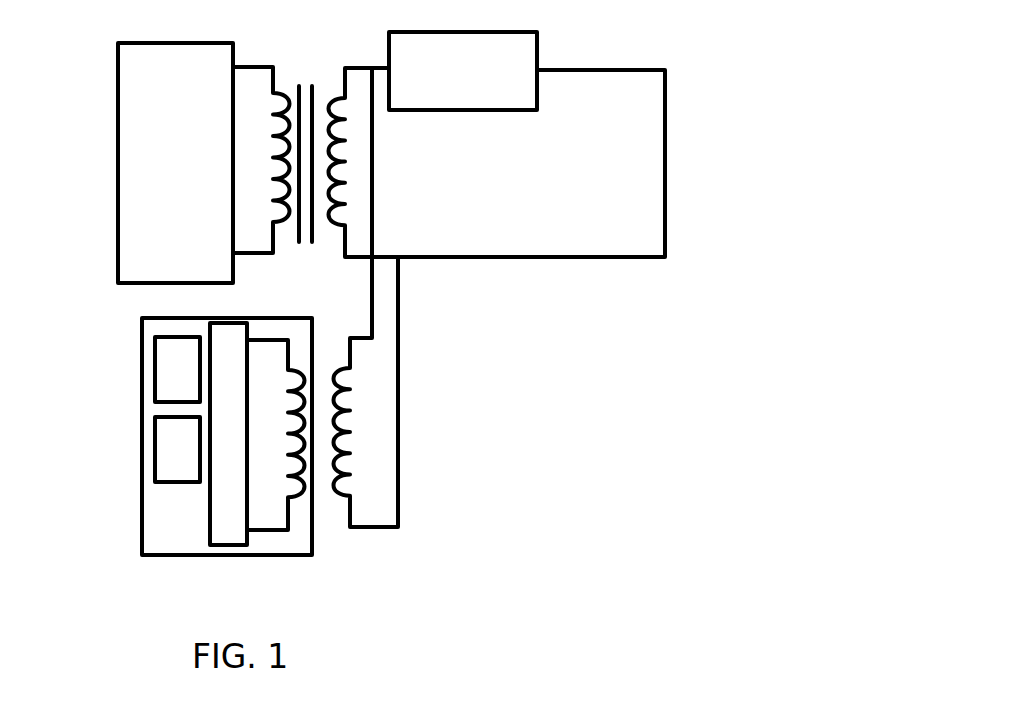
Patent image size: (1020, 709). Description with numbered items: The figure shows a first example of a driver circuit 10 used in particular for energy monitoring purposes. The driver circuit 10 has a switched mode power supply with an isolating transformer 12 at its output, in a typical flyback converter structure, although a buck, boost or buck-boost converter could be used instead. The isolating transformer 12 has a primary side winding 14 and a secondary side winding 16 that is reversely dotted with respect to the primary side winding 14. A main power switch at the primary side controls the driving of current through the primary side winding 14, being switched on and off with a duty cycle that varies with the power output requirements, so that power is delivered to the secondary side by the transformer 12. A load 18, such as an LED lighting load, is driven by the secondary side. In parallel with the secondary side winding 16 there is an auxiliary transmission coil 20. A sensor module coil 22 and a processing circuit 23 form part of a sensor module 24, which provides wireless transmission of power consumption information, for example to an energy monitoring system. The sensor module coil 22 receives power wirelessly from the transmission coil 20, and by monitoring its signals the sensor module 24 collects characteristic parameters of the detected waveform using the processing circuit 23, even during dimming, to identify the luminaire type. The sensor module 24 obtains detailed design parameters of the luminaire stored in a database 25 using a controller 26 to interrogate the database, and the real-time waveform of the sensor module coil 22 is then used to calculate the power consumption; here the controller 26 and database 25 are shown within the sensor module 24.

The driver circuit 10 is at (118, 117).
The isolating transformer 12 is at (408, 197).
The primary side winding 14 is at (287, 120).
The secondary side winding 16 is at (333, 208).
The load 18 is at (462, 110).
The auxiliary transmission coil 20 is at (350, 457).
The sensor module coil 22 is at (300, 488).
The processing circuit 23 is at (208, 513).
The sensor module 24 is at (142, 481).
The database 25 is at (155, 379).
The controller 26 is at (155, 459).